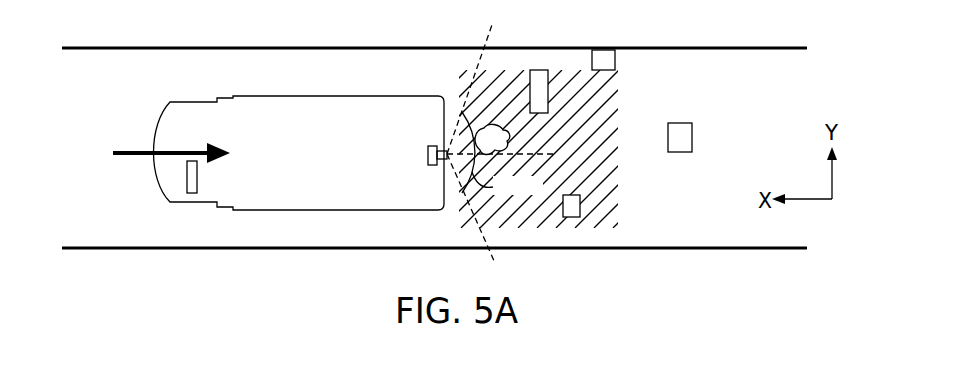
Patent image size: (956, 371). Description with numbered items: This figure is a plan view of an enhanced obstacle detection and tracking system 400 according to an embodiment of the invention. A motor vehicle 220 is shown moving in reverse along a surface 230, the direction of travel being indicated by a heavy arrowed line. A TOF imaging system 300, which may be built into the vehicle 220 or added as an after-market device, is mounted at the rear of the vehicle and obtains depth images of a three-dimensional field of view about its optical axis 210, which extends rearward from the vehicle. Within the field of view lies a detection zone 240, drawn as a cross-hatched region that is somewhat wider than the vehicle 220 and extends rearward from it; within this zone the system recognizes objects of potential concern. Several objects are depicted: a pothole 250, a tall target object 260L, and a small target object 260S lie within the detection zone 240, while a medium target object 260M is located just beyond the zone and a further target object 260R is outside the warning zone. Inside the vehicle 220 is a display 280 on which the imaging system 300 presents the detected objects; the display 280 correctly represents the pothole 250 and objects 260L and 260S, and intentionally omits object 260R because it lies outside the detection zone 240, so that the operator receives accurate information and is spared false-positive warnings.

The optical axis 210 is at (523, 158).
The motor vehicle 220 is at (155, 137).
The surface 230 is at (128, 230).
The detection zone 240 is at (612, 119).
The pothole 250 is at (505, 141).
The tall target object 260L is at (539, 82).
The target object outside warning zone 260R is at (615, 63).
The medium target object 260M is at (684, 123).
The small target object 260S is at (580, 205).
The display 280 is at (197, 181).
The TOF imaging system 300 is at (427, 153).
The enhanced obstacle detection and tracking system 400 is at (440, 70).